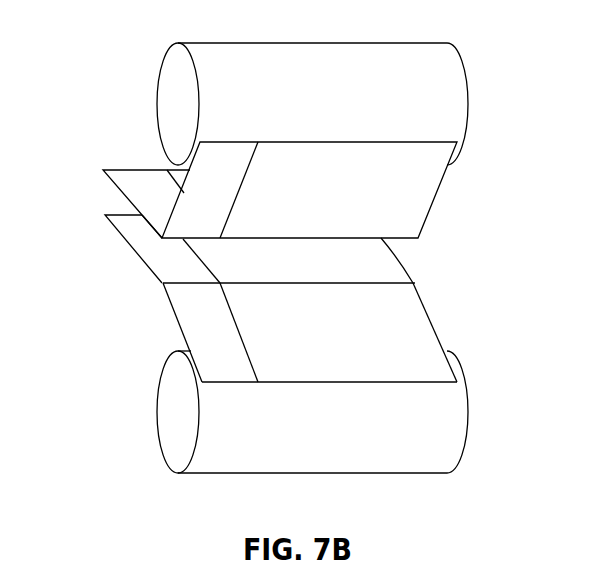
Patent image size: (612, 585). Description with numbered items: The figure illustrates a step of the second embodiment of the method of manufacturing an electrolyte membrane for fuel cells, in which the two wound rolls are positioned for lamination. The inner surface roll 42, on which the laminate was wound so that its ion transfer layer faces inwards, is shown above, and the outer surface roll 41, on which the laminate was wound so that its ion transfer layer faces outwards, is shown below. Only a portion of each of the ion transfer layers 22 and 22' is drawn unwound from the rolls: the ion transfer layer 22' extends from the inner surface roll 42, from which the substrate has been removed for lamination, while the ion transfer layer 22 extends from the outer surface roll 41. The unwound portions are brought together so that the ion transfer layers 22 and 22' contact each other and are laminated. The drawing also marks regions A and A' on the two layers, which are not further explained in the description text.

The inner surface roll 42 is at (453, 108).
The ion transfer layer 22' is at (348, 190).
The transferred strip region A' is at (116, 204).
The strip region A is at (114, 249).
The ion transfer layer 22 is at (347, 310).
The outer surface roll 41 is at (457, 417).